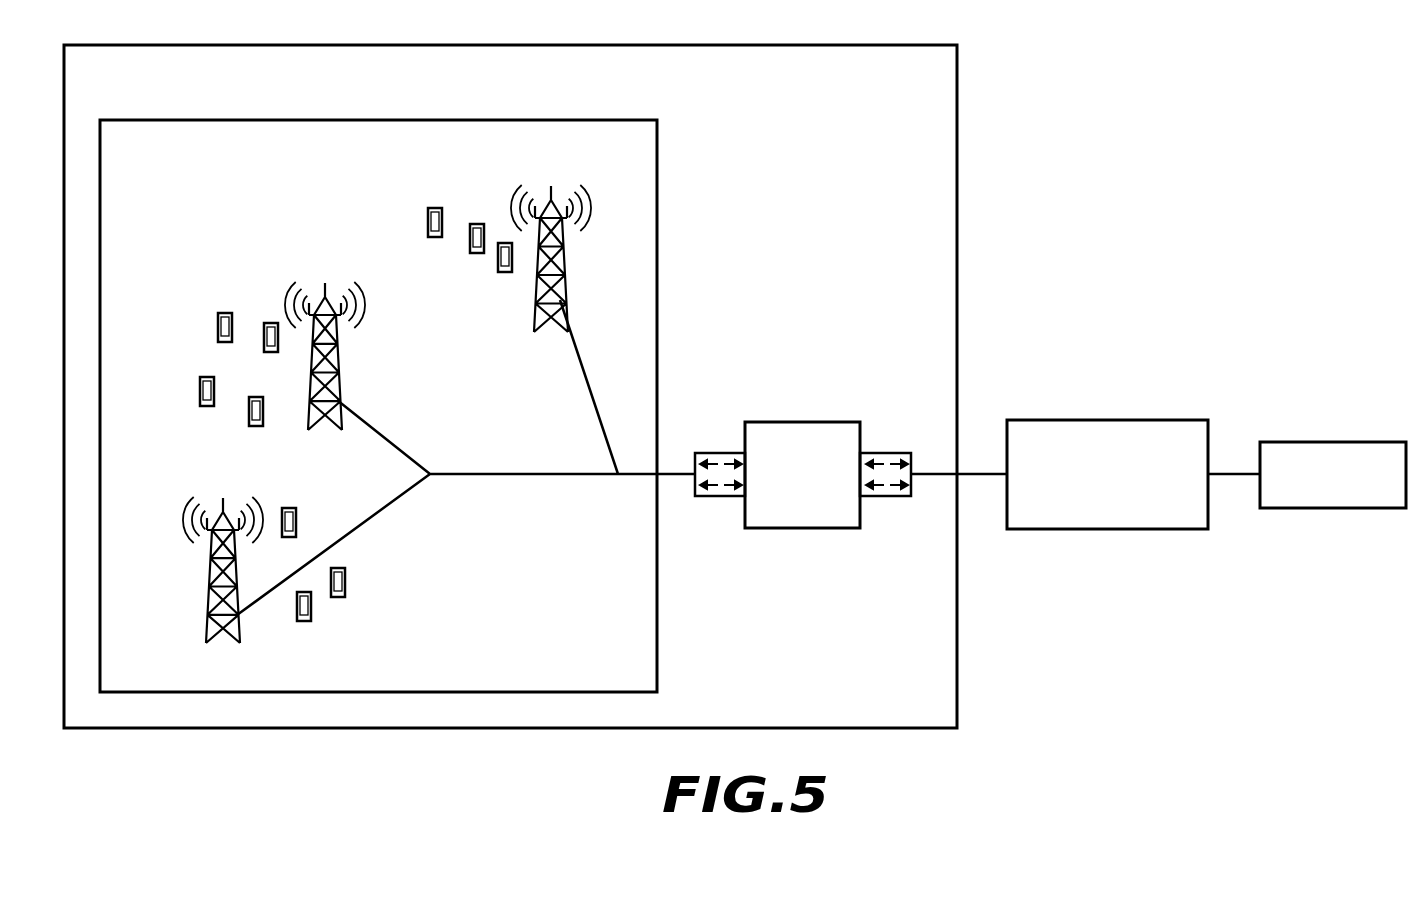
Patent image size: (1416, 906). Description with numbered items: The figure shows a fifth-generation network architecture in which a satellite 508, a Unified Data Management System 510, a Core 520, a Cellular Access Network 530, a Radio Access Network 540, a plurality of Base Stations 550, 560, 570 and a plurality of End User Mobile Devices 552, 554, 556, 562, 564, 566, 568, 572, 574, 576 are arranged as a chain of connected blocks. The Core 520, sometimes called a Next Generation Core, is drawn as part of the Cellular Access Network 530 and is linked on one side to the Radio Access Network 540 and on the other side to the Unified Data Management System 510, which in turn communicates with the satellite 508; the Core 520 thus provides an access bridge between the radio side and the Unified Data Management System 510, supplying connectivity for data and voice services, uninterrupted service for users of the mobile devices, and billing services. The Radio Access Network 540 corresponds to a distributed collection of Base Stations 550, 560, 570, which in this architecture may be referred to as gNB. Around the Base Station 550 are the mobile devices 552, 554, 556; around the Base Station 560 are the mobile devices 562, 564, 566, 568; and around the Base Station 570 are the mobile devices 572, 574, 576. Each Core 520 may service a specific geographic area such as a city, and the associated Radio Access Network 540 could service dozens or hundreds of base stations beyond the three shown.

The satellite 508 is at (1350, 442).
The Unified Data Management System 510 is at (1168, 420).
The 5G Core 520 is at (797, 422).
The Cellular Access Network 530 is at (222, 45).
The 5G Radio Access Network 540 is at (518, 120).
The Base Station 550 is at (212, 575).
The 5G End User Mobile Device 552 is at (296, 512).
The 5G End User Mobile Device 554 is at (345, 580).
The 5G End User Mobile Device 556 is at (312, 608).
The Base Station 560 is at (337, 362).
The 5G End User Mobile Device 562 is at (218, 330).
The 5G End User Mobile Device 564 is at (264, 338).
The 5G End User Mobile Device 566 is at (200, 390).
The 5G End User Mobile Device 568 is at (249, 410).
The Base Station 570 is at (562, 257).
The 5G End User Mobile Device 572 is at (428, 222).
The 5G End User Mobile Device 574 is at (470, 238).
The 5G End User Mobile Device 576 is at (498, 262).